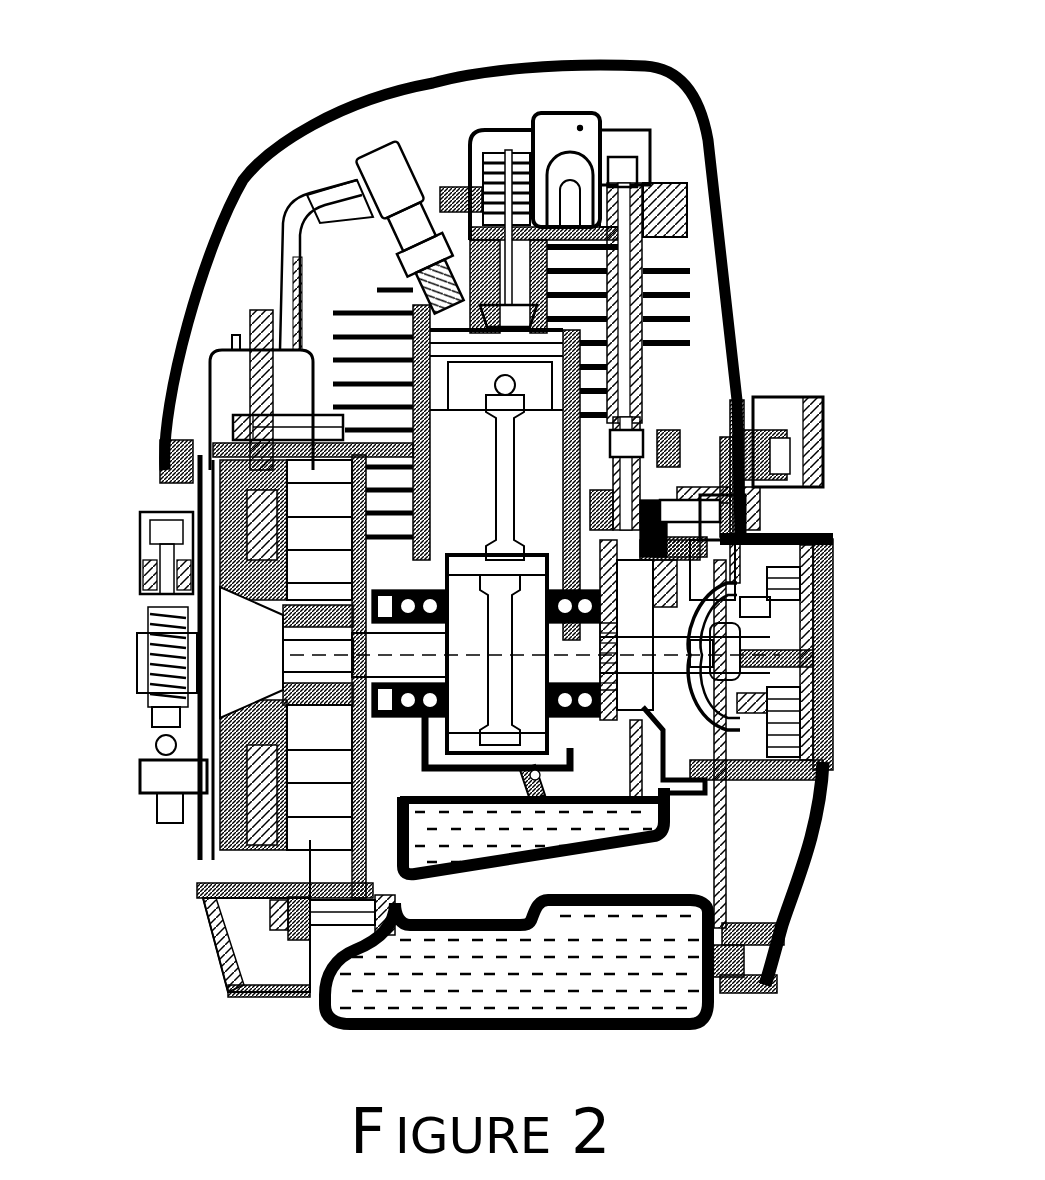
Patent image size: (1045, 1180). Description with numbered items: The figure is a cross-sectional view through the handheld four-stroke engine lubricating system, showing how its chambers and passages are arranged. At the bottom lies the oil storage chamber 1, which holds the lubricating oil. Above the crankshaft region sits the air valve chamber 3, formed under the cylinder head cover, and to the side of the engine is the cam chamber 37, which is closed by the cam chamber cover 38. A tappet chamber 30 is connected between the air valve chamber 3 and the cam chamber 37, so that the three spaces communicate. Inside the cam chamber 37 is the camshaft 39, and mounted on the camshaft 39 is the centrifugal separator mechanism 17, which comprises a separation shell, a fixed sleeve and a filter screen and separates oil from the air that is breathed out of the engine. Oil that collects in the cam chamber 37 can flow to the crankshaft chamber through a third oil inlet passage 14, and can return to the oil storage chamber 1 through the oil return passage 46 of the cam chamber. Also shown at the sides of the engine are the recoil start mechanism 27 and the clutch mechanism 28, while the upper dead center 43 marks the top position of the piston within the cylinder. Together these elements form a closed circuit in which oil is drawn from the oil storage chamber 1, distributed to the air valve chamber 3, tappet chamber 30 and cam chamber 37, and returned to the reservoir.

The oil storage chamber 1 is at (447, 838).
The air valve chamber 3 is at (495, 150).
The third oil inlet passage 14 is at (835, 543).
The centrifugal separator mechanism 17 is at (680, 487).
The recoil start mechanism 27 is at (803, 427).
The clutch mechanism 28 is at (165, 533).
The tappet chamber 30 is at (688, 195).
The cam chamber 37 is at (640, 390).
The cam chamber cover 38 is at (657, 432).
The camshaft 39 is at (758, 512).
The upper dead center 43 is at (433, 313).
The oil return passage of the cam chamber 46 is at (800, 652).